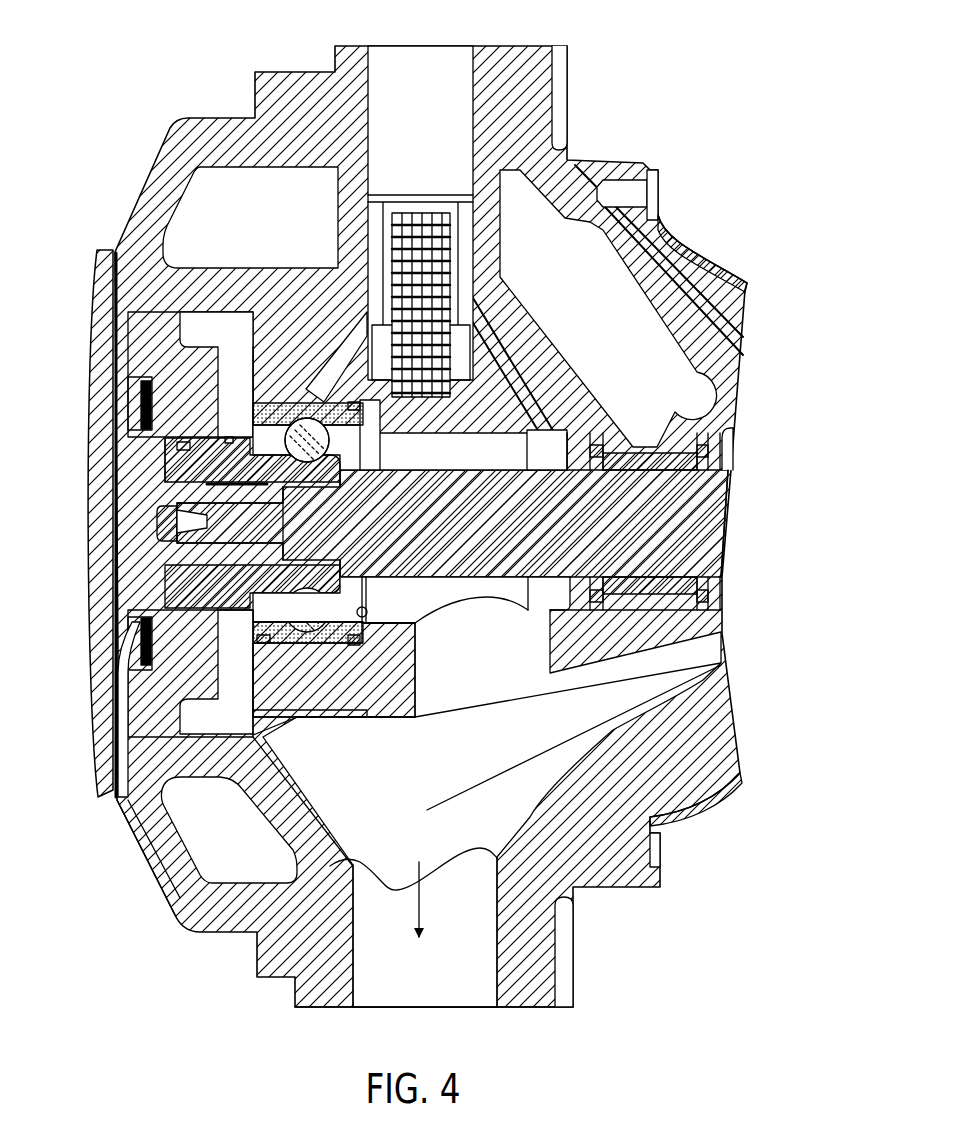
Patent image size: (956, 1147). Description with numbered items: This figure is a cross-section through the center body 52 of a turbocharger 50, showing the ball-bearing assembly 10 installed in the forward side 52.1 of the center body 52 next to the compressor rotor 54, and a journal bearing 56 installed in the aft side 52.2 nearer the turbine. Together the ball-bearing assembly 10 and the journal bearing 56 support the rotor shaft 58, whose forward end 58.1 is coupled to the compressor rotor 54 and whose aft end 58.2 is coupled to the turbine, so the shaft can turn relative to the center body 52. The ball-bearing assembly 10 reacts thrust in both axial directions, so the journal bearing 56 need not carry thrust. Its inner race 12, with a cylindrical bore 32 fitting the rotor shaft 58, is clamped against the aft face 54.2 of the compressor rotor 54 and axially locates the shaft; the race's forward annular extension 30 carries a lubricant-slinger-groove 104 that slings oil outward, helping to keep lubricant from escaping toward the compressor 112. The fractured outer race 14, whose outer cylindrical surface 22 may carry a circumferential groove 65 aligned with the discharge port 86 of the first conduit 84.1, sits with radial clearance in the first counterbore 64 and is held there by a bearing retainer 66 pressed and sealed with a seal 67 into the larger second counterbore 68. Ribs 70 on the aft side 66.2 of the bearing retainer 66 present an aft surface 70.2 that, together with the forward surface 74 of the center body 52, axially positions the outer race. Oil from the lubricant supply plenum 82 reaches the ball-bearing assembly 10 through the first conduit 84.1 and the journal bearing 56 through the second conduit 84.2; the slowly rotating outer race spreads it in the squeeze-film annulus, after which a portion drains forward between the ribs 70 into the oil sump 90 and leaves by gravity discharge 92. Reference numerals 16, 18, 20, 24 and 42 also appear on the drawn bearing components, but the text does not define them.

The ball-bearing assembly 10 is at (243, 630).
The inner race 12 is at (310, 555).
The fractured outer race 14 is at (330, 632).
The inner race 16 is at (337, 437).
The rolling element 18 is at (265, 403).
The outer race 20 is at (248, 363).
The outer cylindrical surface 22 is at (275, 645).
The rolling element 24 is at (307, 440).
The forward annular extension 30 is at (183, 463).
The cylindrical bore 32 is at (350, 530).
The spacer ring 42 is at (383, 438).
The turbocharger 50 is at (688, 140).
The center body 52 is at (326, 1010).
The forward side 52.1 is at (110, 805).
The aft side 52.2 is at (735, 700).
The compressor rotor 54 is at (100, 598).
The aft face 54.2 is at (163, 445).
The journal bearing 56 is at (682, 420).
The rotor shaft 58 is at (738, 520).
The forward end 58.1 is at (237, 516).
The aft end 58.2 is at (733, 483).
The first counterbore 64 is at (363, 637).
The circumferential groove 65 is at (277, 622).
The bearing retainer 66 is at (183, 678).
The aft side 66.2 is at (258, 672).
The seal 67 is at (152, 307).
The second counterbore 68 is at (275, 730).
The ribs 70 is at (233, 367).
The aft surface 70.2 is at (275, 726).
The forward surface 74 is at (368, 612).
The lubricant supply plenum 82 is at (428, 63).
The first conduit 84.1 is at (322, 395).
The second conduit 84.2 is at (533, 367).
The discharge port 86 is at (300, 403).
The oil sump 90 is at (377, 827).
The discharge 92 is at (422, 905).
The lubricant-slinger-groove 104 is at (229, 437).
The compressor 112 is at (78, 290).